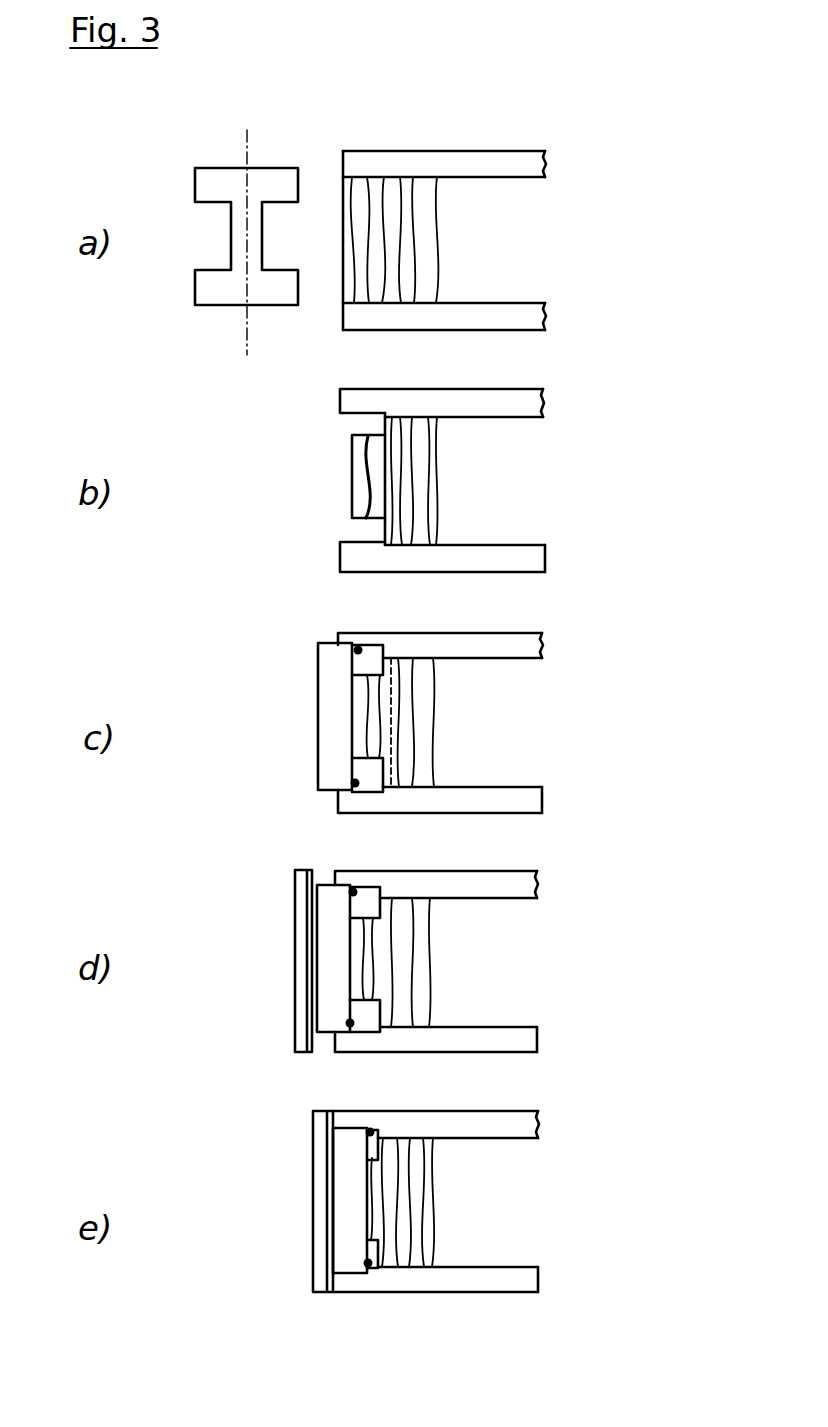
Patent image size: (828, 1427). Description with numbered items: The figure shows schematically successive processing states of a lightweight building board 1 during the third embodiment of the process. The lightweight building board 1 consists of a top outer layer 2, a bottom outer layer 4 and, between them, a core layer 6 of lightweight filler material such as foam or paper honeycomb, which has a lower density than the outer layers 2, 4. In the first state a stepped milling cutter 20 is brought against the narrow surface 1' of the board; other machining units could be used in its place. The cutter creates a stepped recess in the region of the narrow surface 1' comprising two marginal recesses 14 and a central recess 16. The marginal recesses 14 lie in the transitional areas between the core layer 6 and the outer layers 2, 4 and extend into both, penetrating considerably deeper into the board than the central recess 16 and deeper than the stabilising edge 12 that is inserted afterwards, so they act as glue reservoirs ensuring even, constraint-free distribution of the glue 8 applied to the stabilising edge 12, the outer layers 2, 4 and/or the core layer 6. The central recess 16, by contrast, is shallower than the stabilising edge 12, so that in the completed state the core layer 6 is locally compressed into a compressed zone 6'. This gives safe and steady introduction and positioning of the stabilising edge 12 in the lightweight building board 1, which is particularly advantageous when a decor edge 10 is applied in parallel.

The lightweight building board 1 is at (606, 687).
The narrow surface 1' is at (346, 212).
The top outer layer 2 is at (493, 166).
The bottom outer layer 4 is at (508, 318).
The core layer 6 is at (424, 722).
The compressed zone 6' is at (433, 1153).
The glue 8 is at (358, 648).
The decor edge 10 is at (300, 944).
The stabilising edge 12 is at (335, 712).
The marginal recesses 14 is at (370, 418).
The central recess 16 is at (347, 478).
The stepped milling cutter 20 is at (263, 157).